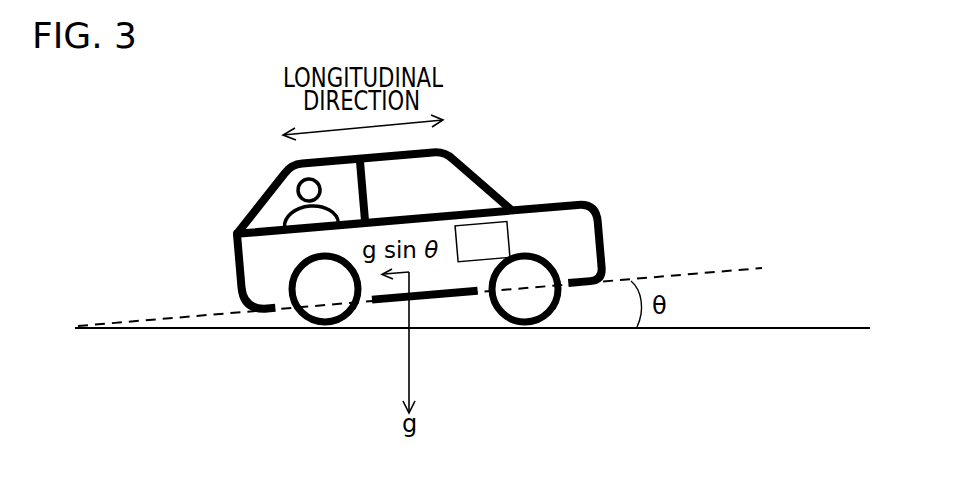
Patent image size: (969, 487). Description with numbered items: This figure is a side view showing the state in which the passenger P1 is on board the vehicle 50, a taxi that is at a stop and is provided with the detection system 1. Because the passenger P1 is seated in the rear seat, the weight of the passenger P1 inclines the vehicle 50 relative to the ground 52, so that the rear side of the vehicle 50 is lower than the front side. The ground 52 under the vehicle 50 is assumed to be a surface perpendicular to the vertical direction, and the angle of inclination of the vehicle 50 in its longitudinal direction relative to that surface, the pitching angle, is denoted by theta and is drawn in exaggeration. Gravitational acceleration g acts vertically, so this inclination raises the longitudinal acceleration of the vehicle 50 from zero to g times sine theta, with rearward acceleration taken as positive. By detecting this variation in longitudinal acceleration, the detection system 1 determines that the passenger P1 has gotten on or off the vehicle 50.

The detection system 1 is at (482, 241).
The vehicle 50 is at (453, 230).
The ground 52 is at (802, 327).
The passenger P1 is at (297, 196).